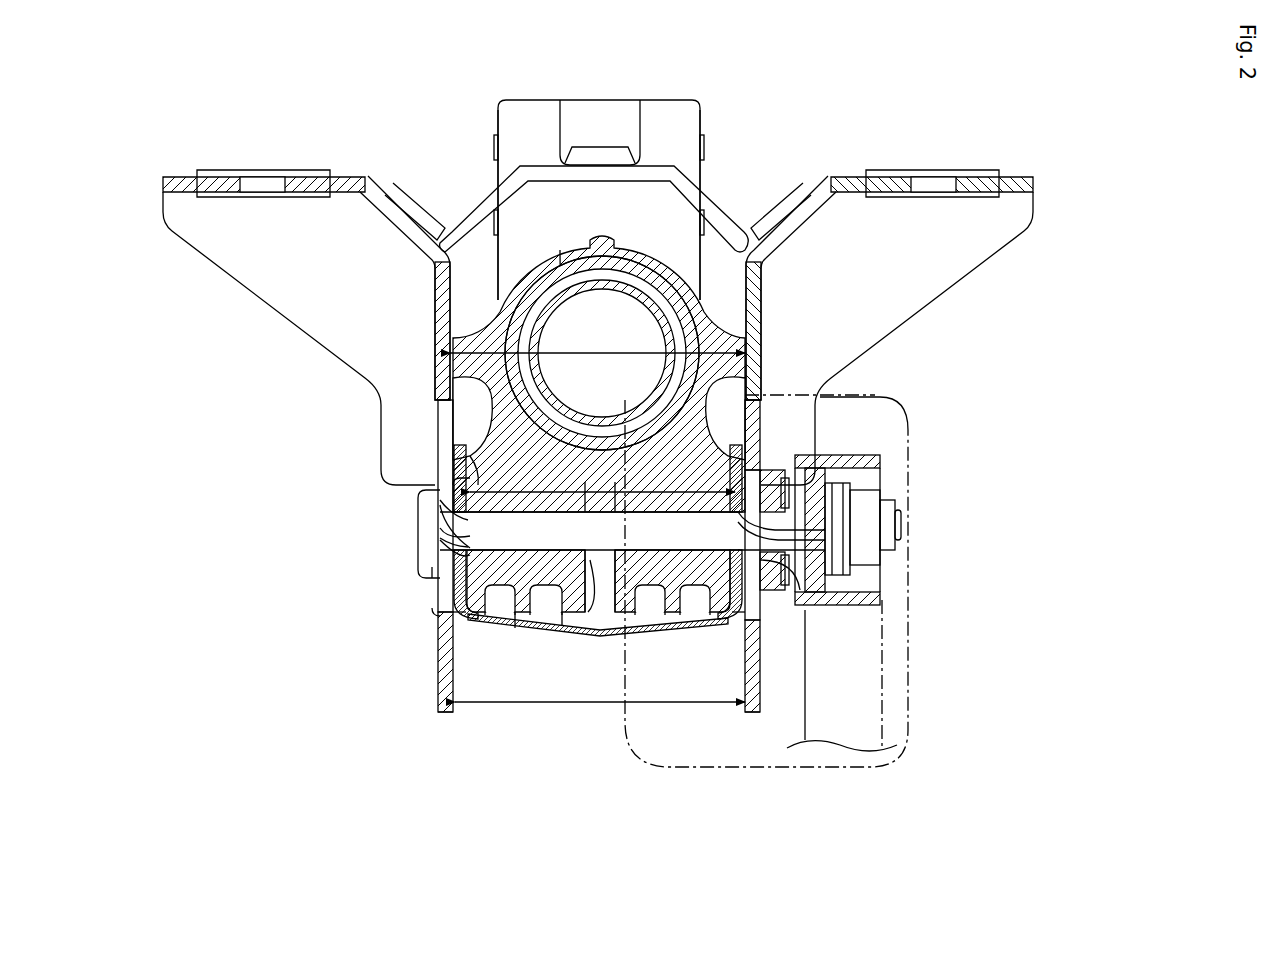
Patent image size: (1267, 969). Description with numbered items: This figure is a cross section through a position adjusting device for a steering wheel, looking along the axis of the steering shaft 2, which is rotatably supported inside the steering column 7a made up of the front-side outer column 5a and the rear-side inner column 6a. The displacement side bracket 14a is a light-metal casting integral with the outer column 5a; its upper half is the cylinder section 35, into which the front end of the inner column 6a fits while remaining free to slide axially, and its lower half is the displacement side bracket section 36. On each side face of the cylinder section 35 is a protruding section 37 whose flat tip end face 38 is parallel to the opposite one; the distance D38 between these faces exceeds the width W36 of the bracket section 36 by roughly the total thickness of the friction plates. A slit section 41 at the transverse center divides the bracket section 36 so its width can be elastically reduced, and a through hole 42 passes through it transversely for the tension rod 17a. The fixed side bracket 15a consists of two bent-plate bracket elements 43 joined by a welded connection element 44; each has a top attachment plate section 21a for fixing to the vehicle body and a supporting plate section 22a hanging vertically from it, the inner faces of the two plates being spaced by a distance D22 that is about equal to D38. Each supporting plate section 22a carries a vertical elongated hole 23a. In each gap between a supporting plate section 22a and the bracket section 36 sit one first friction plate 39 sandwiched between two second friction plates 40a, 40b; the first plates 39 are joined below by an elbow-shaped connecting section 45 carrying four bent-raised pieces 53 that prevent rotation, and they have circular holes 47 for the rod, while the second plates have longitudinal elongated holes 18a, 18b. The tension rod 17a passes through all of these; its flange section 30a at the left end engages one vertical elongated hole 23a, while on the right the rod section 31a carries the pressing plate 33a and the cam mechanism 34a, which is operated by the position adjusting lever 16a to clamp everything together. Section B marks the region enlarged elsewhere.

The steering shaft 2 is at (722, 258).
The outer column 5a is at (558, 275).
The inner column 6a is at (880, 394).
The steering column 7a is at (566, 265).
The displacement side bracket 14a is at (500, 605).
The fixed side bracket 15a is at (660, 172).
The position adjusting lever 16a is at (840, 760).
The tension rod 17a is at (430, 562).
The longitudinal elongated hole 18a is at (468, 548).
The longitudinal elongated hole 18b is at (468, 535).
The attachment plate section 21a is at (330, 182).
The supporting plate section 22a is at (446, 715).
The vertical elongated hole 23a is at (446, 645).
The flange section 30a is at (437, 570).
The rod section 31a is at (640, 605).
The pressing plate 33a is at (770, 592).
The cam mechanism 34a is at (830, 608).
The cylinder section 35 is at (460, 425).
The displacement side bracket section 36 is at (460, 520).
The protruding section 37 is at (458, 378).
The tip end face 38 is at (455, 350).
The first friction plate 39 is at (440, 618).
The second friction plate 40a is at (455, 495).
The second friction plate 40b is at (454, 468).
The slit section 41 is at (586, 612).
The through hole 42 is at (552, 612).
The bracket element 43 is at (365, 182).
The connection element 44 is at (608, 172).
The connecting section 45 is at (538, 628).
The circular hole 47 is at (462, 525).
The bent-raised piece 53 is at (522, 600).
The section B is at (702, 770).
The distance between supporting plate sections D22 is at (598, 710).
The distance between flat faces D38 is at (601, 362).
The width of displacement side bracket section W36 is at (575, 500).